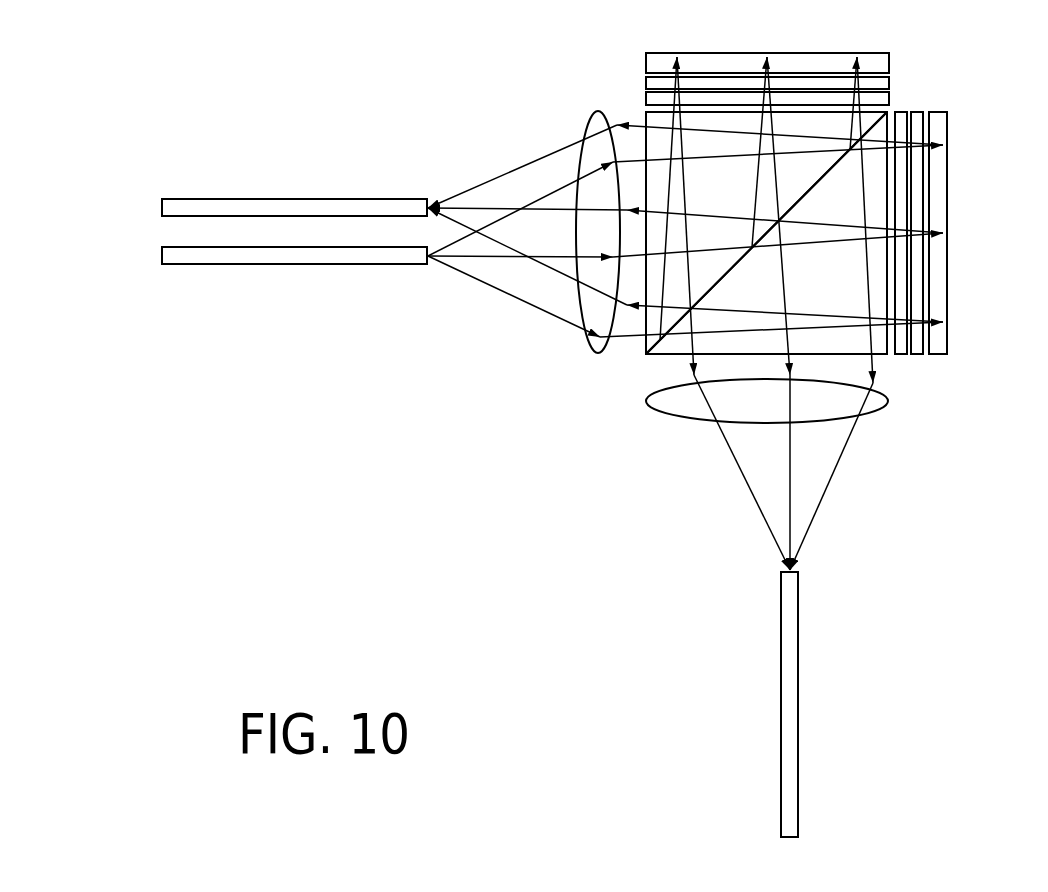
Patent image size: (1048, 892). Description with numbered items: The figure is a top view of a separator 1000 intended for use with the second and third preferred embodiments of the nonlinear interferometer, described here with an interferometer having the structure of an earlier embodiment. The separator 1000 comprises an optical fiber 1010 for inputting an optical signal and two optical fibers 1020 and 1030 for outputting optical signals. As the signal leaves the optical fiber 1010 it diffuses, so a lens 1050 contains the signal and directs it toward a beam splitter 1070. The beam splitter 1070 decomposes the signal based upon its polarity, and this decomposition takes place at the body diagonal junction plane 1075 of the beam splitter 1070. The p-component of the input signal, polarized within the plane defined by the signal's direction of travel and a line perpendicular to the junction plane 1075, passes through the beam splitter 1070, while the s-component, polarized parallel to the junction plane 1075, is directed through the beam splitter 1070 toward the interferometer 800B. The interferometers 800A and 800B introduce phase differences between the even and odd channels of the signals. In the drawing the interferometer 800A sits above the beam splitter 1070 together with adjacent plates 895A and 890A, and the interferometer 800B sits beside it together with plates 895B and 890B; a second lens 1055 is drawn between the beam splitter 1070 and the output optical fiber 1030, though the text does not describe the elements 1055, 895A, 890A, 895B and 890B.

The separator 1000 is at (425, 78).
The optical fiber 1010 is at (220, 264).
The optical fiber 1020 is at (220, 199).
The optical fiber 1030 is at (798, 697).
The lens 1050 is at (598, 110).
The focusing lens 1055 is at (647, 403).
The beam splitter 1070 is at (645, 356).
The body diagonal junction plane 1075 is at (827, 177).
The interferometer 800A is at (890, 55).
The first polarizer 895A is at (890, 80).
The first quarter wave plate 890A is at (890, 98).
The interferometer 800B is at (937, 355).
The second polarizer 895B is at (918, 355).
The second quarter wave plate 890B is at (900, 355).